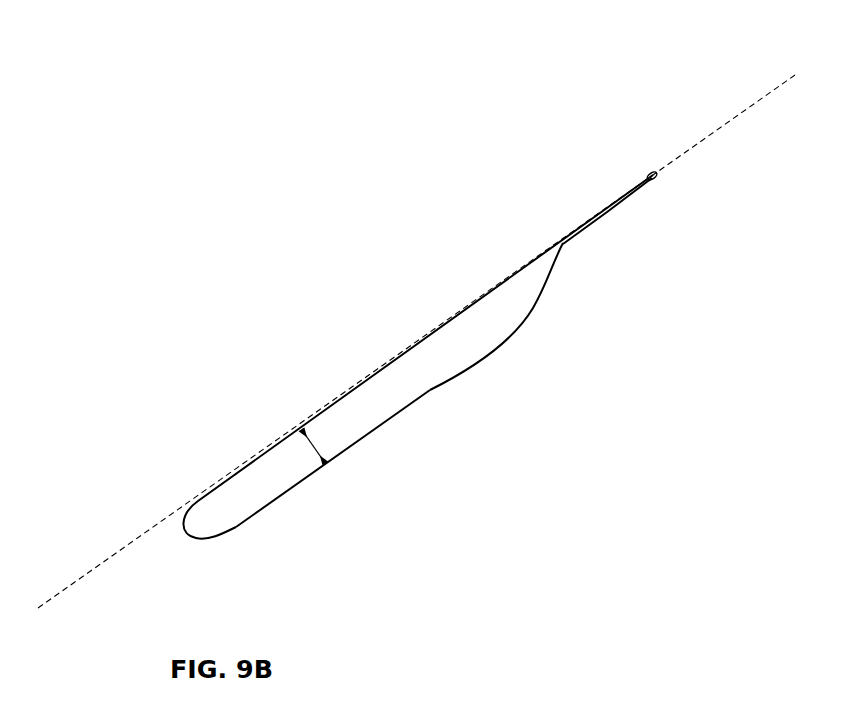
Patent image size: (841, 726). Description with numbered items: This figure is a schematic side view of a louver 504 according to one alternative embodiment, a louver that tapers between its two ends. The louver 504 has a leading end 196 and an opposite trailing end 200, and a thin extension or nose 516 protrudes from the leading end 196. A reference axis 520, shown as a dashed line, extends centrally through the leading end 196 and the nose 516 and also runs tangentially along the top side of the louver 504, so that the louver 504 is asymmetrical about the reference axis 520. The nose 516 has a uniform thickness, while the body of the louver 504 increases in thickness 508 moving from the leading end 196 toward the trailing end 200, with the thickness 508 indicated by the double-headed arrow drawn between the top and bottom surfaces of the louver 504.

The reference axis 520 is at (772, 92).
The nose 516 is at (657, 180).
The leading end 196 is at (566, 244).
The thickness 508 is at (320, 447).
The louver 504 is at (265, 483).
The trailing end 200 is at (197, 540).